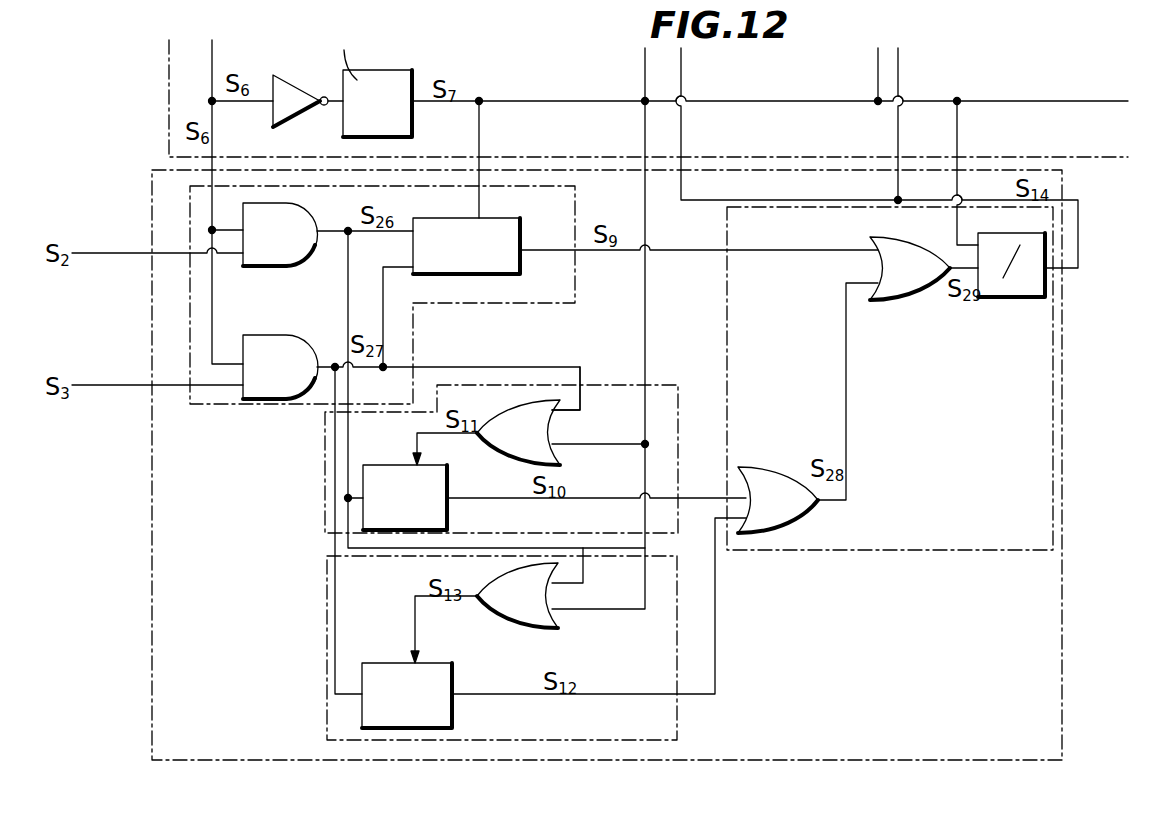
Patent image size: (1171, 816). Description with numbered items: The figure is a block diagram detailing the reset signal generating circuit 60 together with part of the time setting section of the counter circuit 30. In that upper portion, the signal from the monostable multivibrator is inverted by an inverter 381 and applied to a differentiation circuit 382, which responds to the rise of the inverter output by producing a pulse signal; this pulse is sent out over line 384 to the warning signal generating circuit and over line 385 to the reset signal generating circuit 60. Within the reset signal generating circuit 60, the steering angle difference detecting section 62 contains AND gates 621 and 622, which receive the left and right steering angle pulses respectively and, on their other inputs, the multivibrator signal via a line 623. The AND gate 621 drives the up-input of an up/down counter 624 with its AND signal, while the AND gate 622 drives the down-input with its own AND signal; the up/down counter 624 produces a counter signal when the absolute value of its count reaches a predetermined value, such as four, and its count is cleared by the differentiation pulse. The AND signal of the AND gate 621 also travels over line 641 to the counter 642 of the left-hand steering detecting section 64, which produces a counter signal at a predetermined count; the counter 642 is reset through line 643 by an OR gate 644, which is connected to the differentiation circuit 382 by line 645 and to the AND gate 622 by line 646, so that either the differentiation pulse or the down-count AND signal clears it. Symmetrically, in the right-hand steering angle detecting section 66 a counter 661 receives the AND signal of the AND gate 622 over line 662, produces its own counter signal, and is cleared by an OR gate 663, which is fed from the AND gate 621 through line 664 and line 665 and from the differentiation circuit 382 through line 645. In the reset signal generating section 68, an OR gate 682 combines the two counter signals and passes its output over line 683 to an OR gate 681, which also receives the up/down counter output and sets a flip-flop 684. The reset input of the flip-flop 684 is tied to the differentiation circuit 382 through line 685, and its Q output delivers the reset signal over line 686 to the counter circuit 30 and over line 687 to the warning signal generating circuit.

The counter circuit 30 is at (605, 160).
The reset signal generating circuit 60 is at (152, 578).
The steering angle difference detecting section 62 is at (189, 330).
The left-hand steering detecting section 64 is at (325, 470).
The right-hand steering angle detecting section 66 is at (327, 640).
The reset signal generating section 68 is at (727, 309).
The inverter 381 is at (277, 95).
The differentiation circuit 382 is at (400, 71).
The line 384 is at (582, 101).
The line 385 is at (483, 133).
The AND gate 621 is at (308, 222).
The AND gate 622 is at (283, 340).
The line 623 is at (212, 207).
The up/down counter 624 is at (503, 220).
The line 641 is at (352, 431).
The counter 642 is at (449, 471).
The line 643 is at (424, 440).
The OR gate 644 is at (525, 400).
The line 645 is at (575, 446).
The line 646 is at (579, 366).
The counter 661 is at (437, 663).
The line 662 is at (337, 594).
The OR gate 663 is at (510, 630).
The line 664 is at (583, 572).
The line 665 is at (413, 618).
The OR gate 681 is at (905, 302).
The OR gate 682 is at (784, 535).
The line 683 is at (846, 430).
The flip-flop 684 is at (1010, 300).
The line 685 is at (960, 138).
The line 686 is at (683, 133).
The line 687 is at (900, 80).